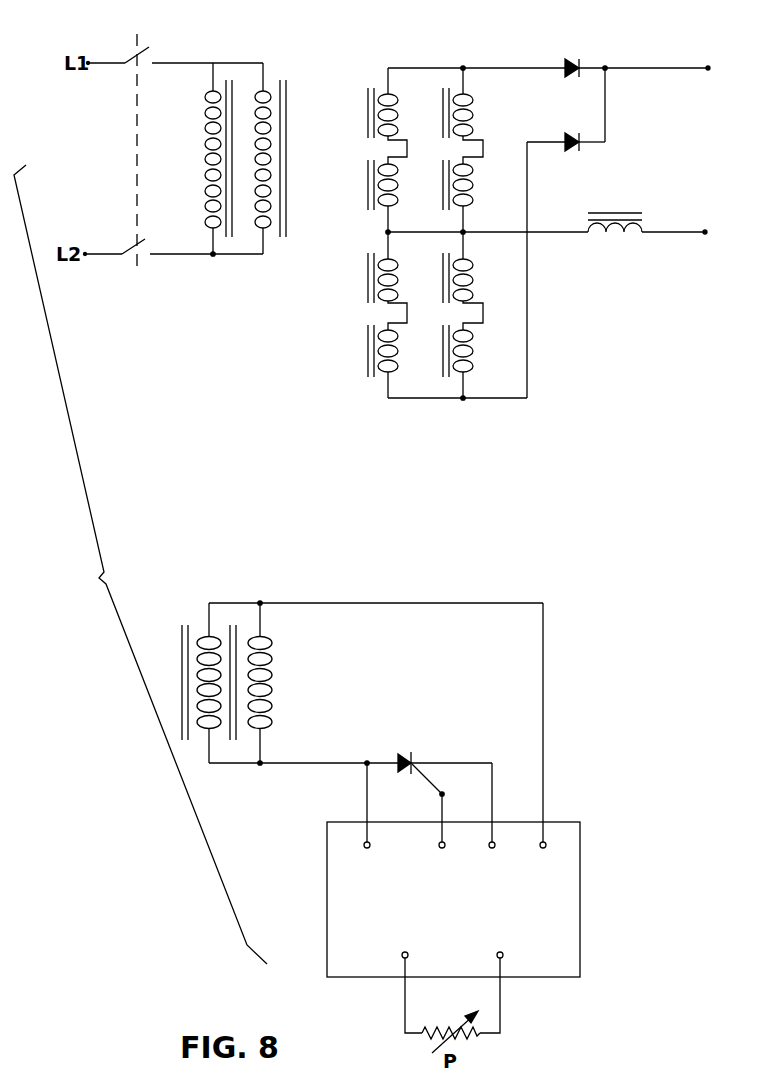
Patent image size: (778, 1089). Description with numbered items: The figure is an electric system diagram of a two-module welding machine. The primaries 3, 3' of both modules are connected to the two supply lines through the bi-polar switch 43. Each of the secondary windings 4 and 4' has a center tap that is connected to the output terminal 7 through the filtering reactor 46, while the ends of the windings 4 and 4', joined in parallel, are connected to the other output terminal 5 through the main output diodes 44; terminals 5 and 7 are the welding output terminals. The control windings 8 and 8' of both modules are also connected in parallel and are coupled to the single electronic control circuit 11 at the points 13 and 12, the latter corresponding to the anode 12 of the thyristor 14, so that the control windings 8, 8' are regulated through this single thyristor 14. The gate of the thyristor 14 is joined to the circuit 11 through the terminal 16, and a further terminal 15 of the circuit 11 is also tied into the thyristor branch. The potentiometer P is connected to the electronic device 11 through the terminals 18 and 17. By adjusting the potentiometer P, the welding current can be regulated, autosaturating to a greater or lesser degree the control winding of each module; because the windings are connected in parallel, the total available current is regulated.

The bi-polar switch 43 is at (118, 142).
The primary 3 is at (218, 146).
The primary 3' is at (270, 146).
The secondary winding 4 is at (387, 219).
The secondary winding 4' is at (463, 219).
The main output diodes 44 is at (566, 102).
The output terminal 5 is at (646, 56).
The filtering reactor 46 is at (615, 241).
The output terminal 7 is at (677, 221).
The control winding 8 is at (201, 669).
The control winding 8' is at (251, 669).
The thyristor 14 is at (419, 763).
The electronic control circuit 11 is at (468, 899).
The anode 12 is at (368, 821).
The point 13 is at (544, 741).
The terminal 15 is at (493, 821).
The terminal 16 is at (443, 836).
The terminal 17 is at (497, 980).
The terminal 18 is at (407, 980).